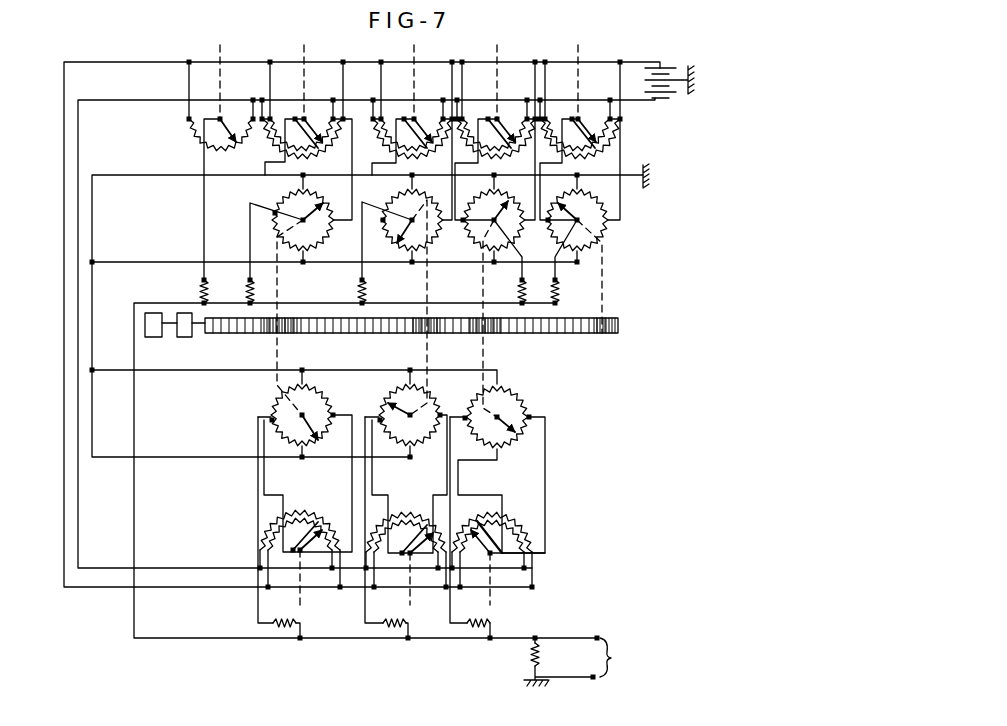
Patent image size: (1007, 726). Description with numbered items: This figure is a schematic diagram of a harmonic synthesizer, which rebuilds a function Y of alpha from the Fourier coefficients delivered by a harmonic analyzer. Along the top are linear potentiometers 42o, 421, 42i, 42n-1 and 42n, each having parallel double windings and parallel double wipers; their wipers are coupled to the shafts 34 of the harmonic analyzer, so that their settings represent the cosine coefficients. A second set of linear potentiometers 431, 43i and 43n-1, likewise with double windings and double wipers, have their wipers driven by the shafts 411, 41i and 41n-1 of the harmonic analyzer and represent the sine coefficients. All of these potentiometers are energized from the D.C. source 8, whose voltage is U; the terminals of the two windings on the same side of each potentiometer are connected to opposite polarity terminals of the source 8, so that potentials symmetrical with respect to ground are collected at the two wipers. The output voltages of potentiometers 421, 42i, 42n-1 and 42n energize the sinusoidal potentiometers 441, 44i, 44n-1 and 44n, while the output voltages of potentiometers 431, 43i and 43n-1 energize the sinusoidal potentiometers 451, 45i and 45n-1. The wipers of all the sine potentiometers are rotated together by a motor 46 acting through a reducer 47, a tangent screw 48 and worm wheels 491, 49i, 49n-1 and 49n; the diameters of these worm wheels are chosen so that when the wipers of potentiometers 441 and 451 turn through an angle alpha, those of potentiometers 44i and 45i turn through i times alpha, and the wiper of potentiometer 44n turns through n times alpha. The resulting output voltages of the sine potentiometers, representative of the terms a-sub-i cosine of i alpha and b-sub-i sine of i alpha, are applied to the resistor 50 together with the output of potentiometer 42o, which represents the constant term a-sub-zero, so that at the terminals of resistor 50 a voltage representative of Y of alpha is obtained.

The D.C. source 8 is at (669, 70).
The shafts of the harmonic analyzer 34 is at (593, 49).
The linear potentiometer 42o is at (255, 138).
The linear potentiometer 421 is at (307, 141).
The linear potentiometer 42i is at (412, 141).
The linear potentiometer 42n-1 is at (495, 141).
The linear potentiometer 42n is at (612, 146).
The sinusoidal potentiometer 441 is at (272, 201).
The sinusoidal potentiometer 44i is at (400, 295).
The sinusoidal potentiometer 44n-1 is at (470, 238).
The sinusoidal potentiometer 44n is at (556, 236).
The sinusoidal potentiometer 451 is at (272, 401).
The sinusoidal potentiometer 45i is at (380, 398).
The sinusoidal potentiometer 45n-1 is at (525, 402).
The linear potentiometer 431 is at (300, 550).
The linear potentiometer 43i is at (424, 515).
The linear potentiometer 43n-1 is at (530, 565).
The shaft of the harmonic analyzer 411 is at (300, 600).
The shaft of the harmonic analyzer 41i is at (405, 602).
The shaft of the harmonic analyzer 41n-1 is at (492, 606).
The motor 46 is at (155, 338).
The reducer 47 is at (187, 338).
The tangent screw 48 is at (411, 339).
The worm wheel 491 is at (292, 334).
The worm wheel 49i is at (436, 334).
The worm wheel 49n-1 is at (490, 334).
The worm wheel 49n is at (610, 334).
The resistor 50 is at (526, 666).